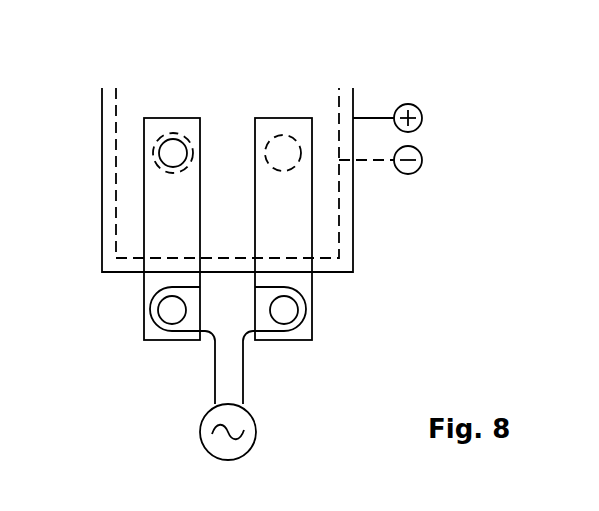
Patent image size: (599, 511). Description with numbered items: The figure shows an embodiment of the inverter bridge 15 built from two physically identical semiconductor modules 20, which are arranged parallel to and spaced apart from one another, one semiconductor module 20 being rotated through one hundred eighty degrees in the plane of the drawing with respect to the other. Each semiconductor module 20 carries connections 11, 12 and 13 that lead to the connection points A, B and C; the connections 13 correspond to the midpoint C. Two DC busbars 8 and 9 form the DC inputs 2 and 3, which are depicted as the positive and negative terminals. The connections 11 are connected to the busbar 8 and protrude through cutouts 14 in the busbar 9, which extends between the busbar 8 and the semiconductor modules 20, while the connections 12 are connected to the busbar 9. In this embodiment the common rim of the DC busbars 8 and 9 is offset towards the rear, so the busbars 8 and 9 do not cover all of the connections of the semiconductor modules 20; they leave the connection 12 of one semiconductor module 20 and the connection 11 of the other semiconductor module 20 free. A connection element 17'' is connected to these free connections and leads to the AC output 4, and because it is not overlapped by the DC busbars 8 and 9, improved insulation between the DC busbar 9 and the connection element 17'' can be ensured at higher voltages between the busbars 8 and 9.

The DC input 2 is at (422, 108).
The DC input 3 is at (423, 170).
The AC output 4 is at (252, 445).
The DC busbar 8 is at (355, 259).
The DC busbar 9 is at (350, 222).
The connection 11 is at (162, 166).
The connection 12 is at (287, 133).
The connection 13 is at (152, 232).
The cutout 14 is at (152, 153).
The inverter bridge 15 is at (137, 378).
The connection element 17'' is at (235, 352).
The semiconductor module 20 is at (183, 348).